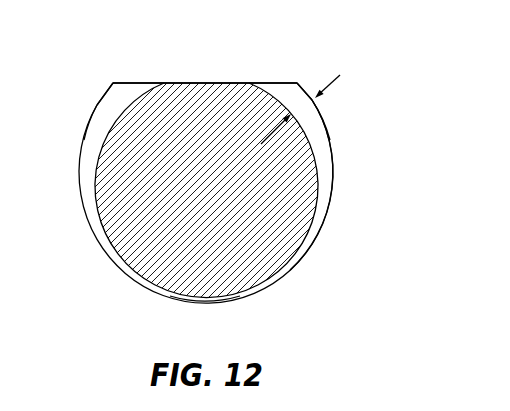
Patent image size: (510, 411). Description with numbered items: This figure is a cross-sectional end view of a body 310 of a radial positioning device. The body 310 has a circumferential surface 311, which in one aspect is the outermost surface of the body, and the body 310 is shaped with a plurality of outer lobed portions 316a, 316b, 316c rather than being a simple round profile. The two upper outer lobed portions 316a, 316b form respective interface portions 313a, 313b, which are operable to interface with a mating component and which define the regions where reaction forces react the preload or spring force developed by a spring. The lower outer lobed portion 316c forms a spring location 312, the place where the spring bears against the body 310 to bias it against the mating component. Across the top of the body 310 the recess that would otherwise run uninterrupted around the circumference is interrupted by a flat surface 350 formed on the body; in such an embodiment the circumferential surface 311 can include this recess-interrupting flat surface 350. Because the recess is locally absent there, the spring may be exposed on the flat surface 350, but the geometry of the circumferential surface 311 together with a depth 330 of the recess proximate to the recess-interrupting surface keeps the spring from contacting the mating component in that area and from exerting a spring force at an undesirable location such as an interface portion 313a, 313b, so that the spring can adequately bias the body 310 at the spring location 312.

The body 310 is at (163, 28).
The circumferential surface 311 is at (323, 224).
The spring location 312 is at (209, 303).
The interface portion 313a is at (98, 103).
The interface portion 313b is at (316, 102).
The outer lobed portion 316a is at (92, 123).
The outer lobed portion 316b is at (318, 131).
The outer lobed portion 316c is at (203, 303).
The depth 330 is at (332, 85).
The flat surface 350 is at (210, 83).